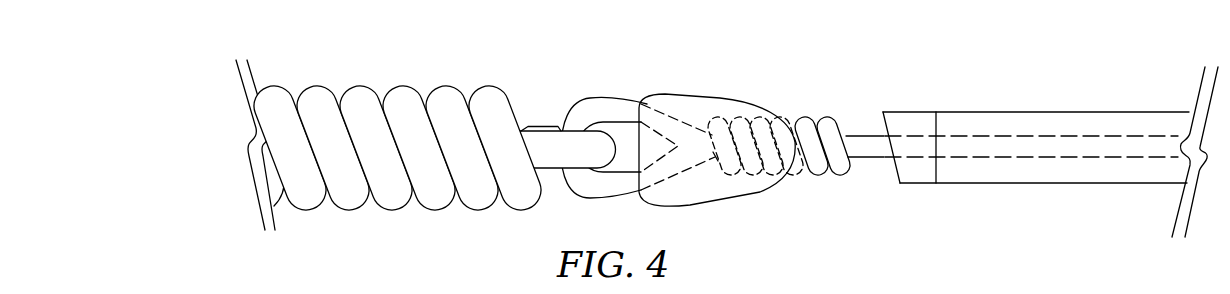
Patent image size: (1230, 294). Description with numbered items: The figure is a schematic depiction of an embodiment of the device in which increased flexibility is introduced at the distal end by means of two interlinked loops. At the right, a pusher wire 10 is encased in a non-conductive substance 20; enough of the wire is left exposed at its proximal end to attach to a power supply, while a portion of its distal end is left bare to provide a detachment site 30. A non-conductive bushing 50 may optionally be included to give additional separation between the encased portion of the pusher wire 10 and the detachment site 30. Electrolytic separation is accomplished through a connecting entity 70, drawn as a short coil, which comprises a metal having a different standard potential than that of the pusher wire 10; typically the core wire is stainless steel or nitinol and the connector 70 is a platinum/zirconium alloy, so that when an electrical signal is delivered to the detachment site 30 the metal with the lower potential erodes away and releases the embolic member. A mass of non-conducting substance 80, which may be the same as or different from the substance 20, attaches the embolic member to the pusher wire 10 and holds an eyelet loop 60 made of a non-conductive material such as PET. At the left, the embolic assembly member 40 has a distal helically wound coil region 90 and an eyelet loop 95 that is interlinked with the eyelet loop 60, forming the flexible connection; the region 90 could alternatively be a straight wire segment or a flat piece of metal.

The pusher wire 10 is at (1123, 146).
The non-conductive substance 20 is at (1044, 130).
The detachment site 30 is at (866, 131).
The embolic assembly member 40 is at (336, 212).
The non-conductive bushing 50 is at (911, 128).
The eyelet loop 60 is at (598, 113).
The connecting entity 70 is at (843, 169).
The mass of non-conducting substance 80 is at (703, 114).
The helically wound coil region 90 is at (316, 100).
The eyelet loop 95 is at (539, 133).